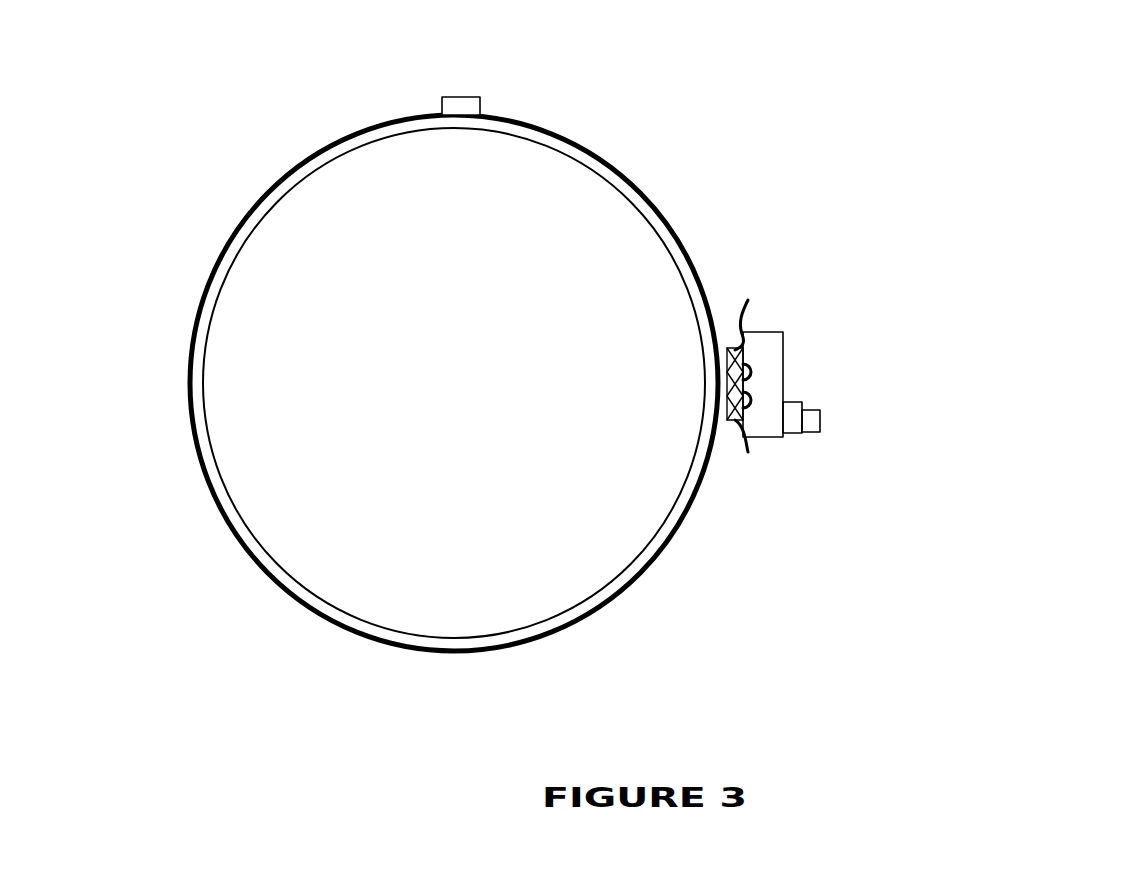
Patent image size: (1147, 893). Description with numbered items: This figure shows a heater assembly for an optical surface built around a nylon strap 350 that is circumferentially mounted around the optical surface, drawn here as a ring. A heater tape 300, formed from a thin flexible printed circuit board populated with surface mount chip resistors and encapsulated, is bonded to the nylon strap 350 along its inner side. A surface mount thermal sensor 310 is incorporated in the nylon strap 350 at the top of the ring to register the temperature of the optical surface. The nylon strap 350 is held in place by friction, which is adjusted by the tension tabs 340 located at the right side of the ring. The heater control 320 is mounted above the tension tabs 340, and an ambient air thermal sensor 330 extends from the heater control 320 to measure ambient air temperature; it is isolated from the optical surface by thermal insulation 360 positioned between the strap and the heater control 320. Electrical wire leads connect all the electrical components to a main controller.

The heater tape 300 is at (315, 177).
The surface mount thermal sensor 310 is at (480, 106).
The heater control 320 is at (783, 360).
The ambient air thermal sensor 330 is at (820, 423).
The tension tabs 340 is at (748, 300).
The nylon strap 350 is at (537, 645).
The thermal insulation 360 is at (793, 437).